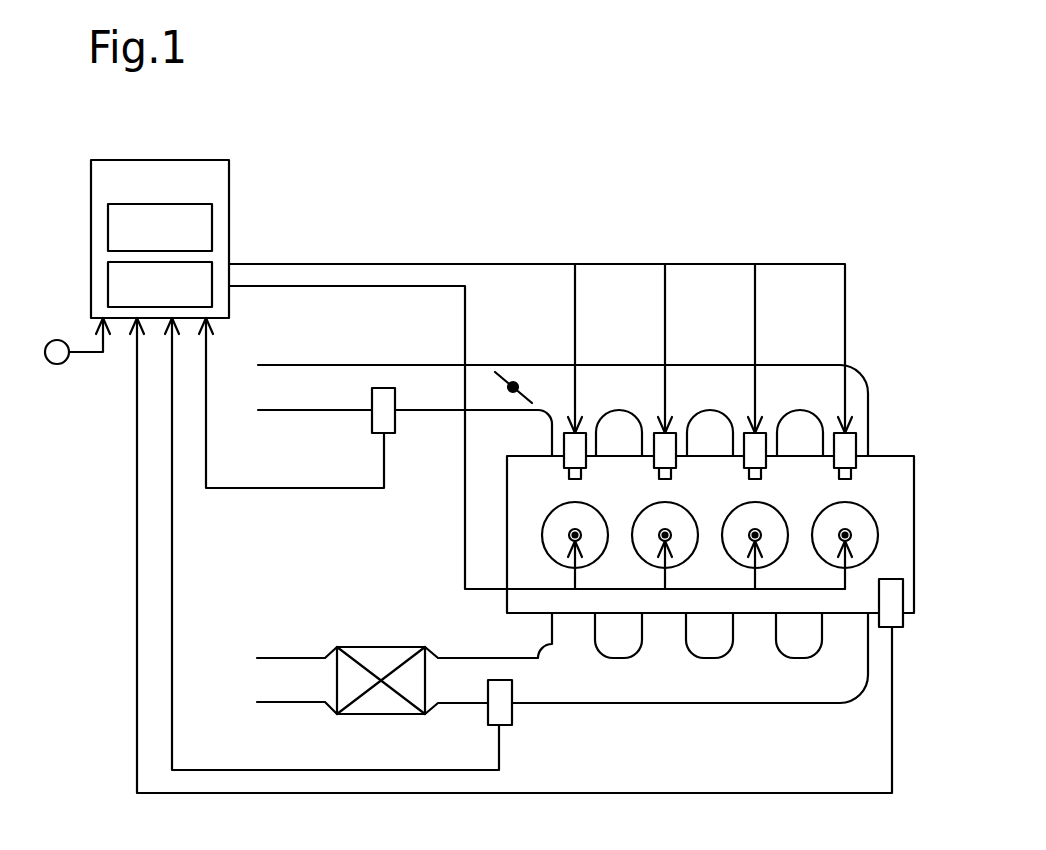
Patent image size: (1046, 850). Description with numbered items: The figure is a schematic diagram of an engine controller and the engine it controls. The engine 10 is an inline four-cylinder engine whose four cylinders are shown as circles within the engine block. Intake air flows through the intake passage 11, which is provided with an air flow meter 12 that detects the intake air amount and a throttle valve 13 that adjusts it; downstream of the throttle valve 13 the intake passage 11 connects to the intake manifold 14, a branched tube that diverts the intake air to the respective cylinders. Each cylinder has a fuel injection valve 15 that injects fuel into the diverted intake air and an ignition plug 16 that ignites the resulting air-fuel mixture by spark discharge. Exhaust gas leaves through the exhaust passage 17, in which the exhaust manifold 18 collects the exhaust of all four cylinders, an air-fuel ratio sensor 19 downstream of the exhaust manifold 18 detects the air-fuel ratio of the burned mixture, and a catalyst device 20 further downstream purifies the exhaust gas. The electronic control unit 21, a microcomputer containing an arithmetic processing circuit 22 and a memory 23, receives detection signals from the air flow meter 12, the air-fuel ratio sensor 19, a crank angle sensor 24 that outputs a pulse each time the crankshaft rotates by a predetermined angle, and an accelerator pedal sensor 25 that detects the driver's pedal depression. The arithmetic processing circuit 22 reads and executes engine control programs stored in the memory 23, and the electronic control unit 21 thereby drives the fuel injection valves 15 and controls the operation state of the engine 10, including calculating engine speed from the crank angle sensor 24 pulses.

The engine 10 is at (887, 455).
The intake passage 11 is at (329, 363).
The air flow meter 12 is at (395, 420).
The throttle valve 13 is at (512, 380).
The intake manifold 14 is at (699, 364).
The fuel injection valve 15 is at (580, 473).
The ignition plug 16 is at (568, 542).
The exhaust passage 17 is at (290, 655).
The exhaust manifold 18 is at (696, 706).
The air-fuel ratio sensor 19 is at (512, 715).
The catalyst device 20 is at (378, 655).
The electronic control unit 21 is at (229, 190).
The arithmetic processing circuit 22 is at (108, 225).
The memory 23 is at (108, 280).
The crank angle sensor 24 is at (903, 592).
The accelerator pedal sensor 25 is at (57, 364).